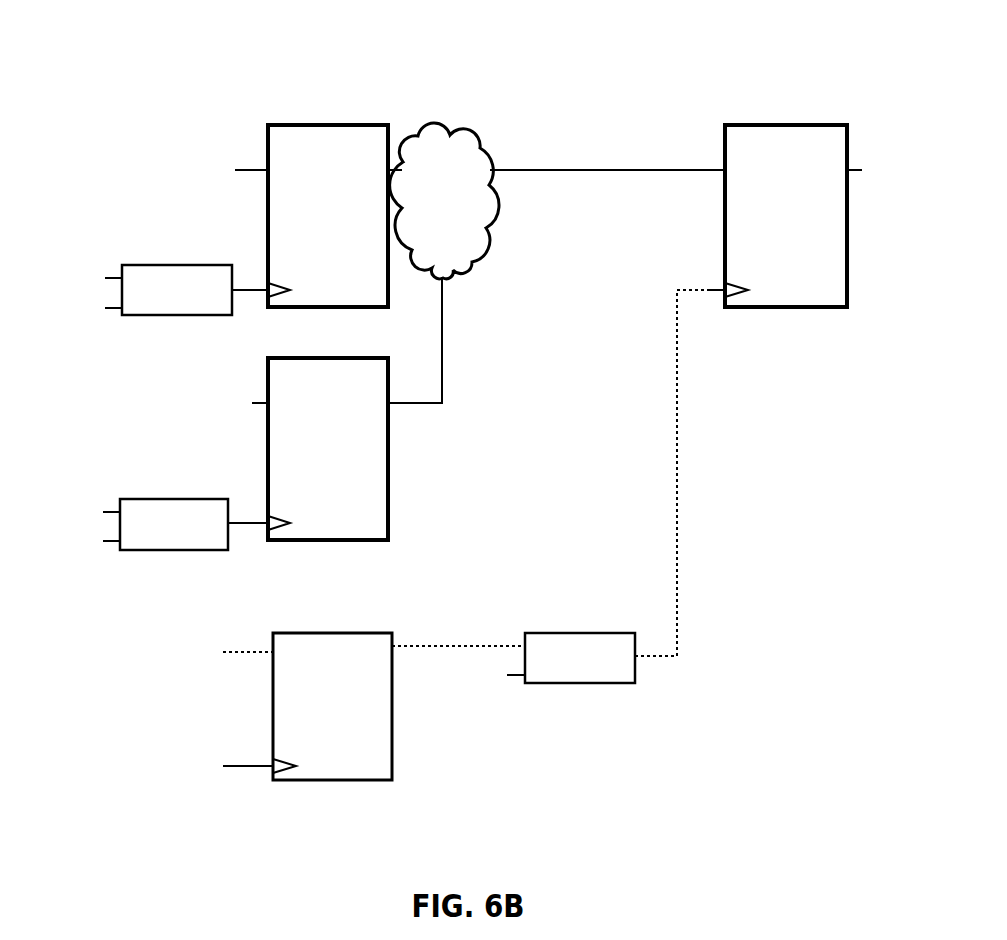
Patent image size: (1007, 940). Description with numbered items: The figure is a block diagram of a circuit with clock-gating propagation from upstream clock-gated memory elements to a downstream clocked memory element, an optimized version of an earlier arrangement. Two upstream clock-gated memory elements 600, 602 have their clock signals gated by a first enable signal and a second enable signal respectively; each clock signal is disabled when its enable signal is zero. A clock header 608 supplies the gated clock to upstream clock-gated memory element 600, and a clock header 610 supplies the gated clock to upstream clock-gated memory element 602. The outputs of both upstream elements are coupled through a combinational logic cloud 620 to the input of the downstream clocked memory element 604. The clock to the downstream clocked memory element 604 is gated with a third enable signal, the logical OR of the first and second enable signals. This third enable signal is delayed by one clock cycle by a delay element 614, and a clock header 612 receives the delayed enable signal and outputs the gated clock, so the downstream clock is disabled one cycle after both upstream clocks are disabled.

The upstream clock-gated memory element 600 is at (318, 216).
The upstream clock-gated memory element 602 is at (347, 408).
The downstream clocked memory element 604 is at (676, 216).
The clock header 608 is at (166, 291).
The clock header 610 is at (165, 525).
The clock header 612 is at (551, 487).
The delay element 614 is at (286, 706).
The combinational logic cloud 620 is at (437, 120).